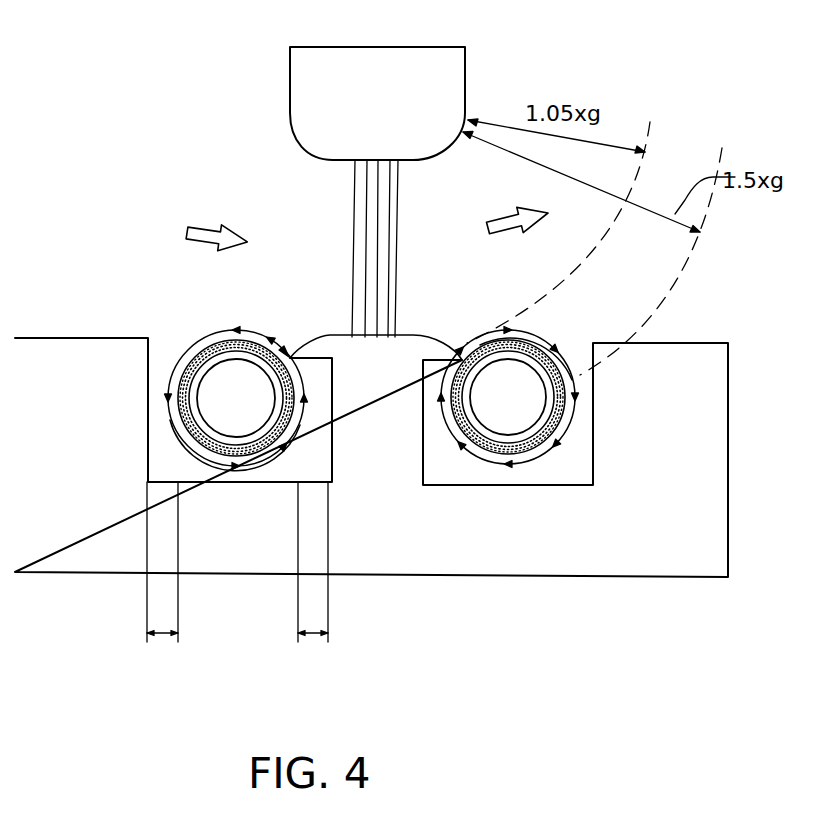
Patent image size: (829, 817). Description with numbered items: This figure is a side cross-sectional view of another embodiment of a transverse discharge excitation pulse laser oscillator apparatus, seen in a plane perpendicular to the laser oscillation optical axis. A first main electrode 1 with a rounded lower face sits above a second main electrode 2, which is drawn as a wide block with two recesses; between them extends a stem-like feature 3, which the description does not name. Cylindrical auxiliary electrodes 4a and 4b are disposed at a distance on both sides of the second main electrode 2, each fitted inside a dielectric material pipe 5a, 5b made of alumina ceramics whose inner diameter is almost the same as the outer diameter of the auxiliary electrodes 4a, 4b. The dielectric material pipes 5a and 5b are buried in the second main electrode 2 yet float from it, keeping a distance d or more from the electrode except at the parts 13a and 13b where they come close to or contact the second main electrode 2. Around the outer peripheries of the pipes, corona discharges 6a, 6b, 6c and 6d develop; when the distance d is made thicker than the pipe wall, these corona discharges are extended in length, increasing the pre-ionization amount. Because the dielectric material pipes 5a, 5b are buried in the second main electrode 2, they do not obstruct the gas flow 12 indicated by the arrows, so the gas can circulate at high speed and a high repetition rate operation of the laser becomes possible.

The first main electrode 1 is at (293, 94).
The second main electrode 2 is at (223, 553).
The strand bundle / stem 3 is at (353, 187).
The auxiliary electrode 4a is at (220, 375).
The auxiliary electrode 4b is at (502, 407).
The dielectric material pipe 5a is at (188, 365).
The dielectric material pipe 5b is at (517, 455).
The corona discharge 6a is at (223, 333).
The corona discharge 6b is at (262, 463).
The corona discharge 6c is at (475, 458).
The corona discharge 6d is at (555, 348).
The gas flow 12 is at (190, 232).
The contact part 13a is at (285, 352).
The contact part 13b is at (463, 352).